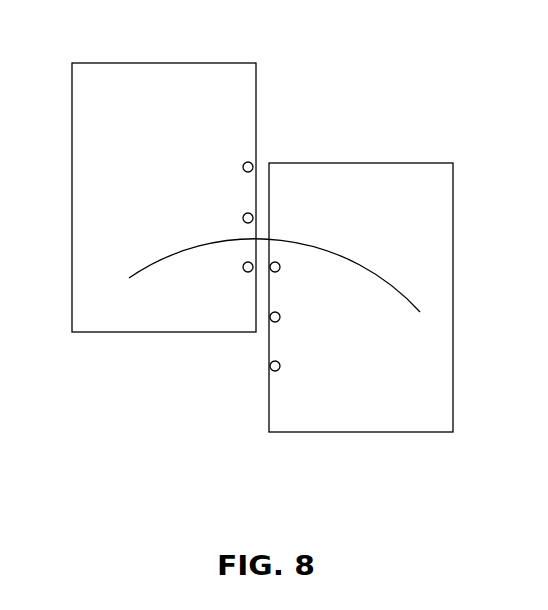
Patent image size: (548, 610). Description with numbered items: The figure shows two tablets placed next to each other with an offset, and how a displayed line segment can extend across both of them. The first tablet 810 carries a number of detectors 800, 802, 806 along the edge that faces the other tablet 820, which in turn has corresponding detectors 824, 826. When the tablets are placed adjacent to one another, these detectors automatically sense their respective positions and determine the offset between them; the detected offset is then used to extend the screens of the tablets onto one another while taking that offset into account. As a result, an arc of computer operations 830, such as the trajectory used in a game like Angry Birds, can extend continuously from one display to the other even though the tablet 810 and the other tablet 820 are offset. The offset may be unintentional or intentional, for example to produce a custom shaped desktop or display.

The tablet 810 is at (98, 63).
The other tablet 820 is at (424, 163).
The detector 800 is at (243, 166).
The detector 802 is at (243, 217).
The detector 806 is at (243, 267).
The detector 824 is at (280, 268).
The detector 826 is at (280, 318).
The arc 830 is at (168, 254).